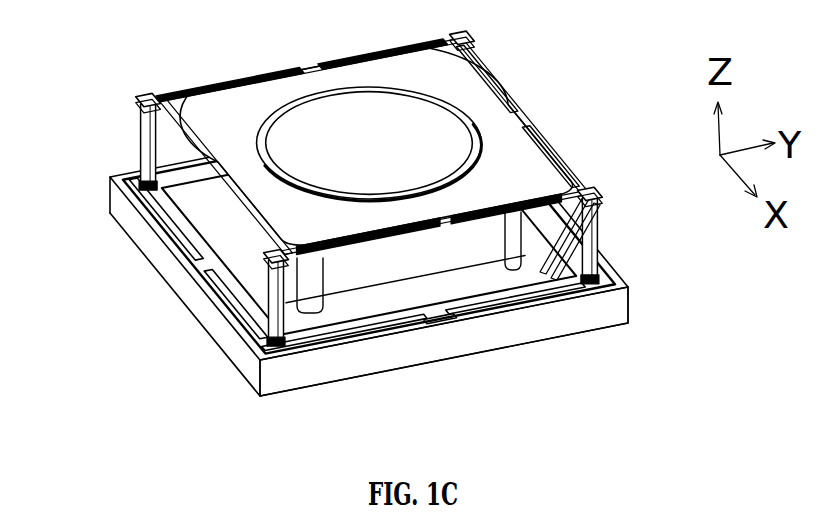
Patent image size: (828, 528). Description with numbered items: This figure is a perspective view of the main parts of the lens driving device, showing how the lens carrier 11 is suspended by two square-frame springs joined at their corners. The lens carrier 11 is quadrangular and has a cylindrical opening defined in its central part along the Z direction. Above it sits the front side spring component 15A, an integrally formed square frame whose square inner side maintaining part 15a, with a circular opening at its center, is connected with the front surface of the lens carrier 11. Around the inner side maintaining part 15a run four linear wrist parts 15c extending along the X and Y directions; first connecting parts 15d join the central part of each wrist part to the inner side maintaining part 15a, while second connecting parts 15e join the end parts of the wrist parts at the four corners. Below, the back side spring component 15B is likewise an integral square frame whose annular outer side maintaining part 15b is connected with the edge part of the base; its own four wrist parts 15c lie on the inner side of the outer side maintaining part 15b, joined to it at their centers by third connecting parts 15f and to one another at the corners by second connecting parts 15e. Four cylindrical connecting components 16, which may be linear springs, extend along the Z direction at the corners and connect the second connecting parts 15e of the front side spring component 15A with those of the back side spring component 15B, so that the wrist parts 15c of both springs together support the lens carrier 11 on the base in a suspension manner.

The lens carrier 11 is at (412, 138).
The front side spring component 15A is at (460, 87).
The back side spring component 15B is at (253, 277).
The inner side maintaining part 15a is at (420, 67).
The outer side maintaining part 15b is at (540, 307).
The wrist parts 15c is at (195, 200).
The first connecting parts 15d is at (517, 113).
The second connecting parts 15e is at (158, 97).
The third connecting parts 15f is at (438, 312).
The connecting components 16 is at (148, 142).